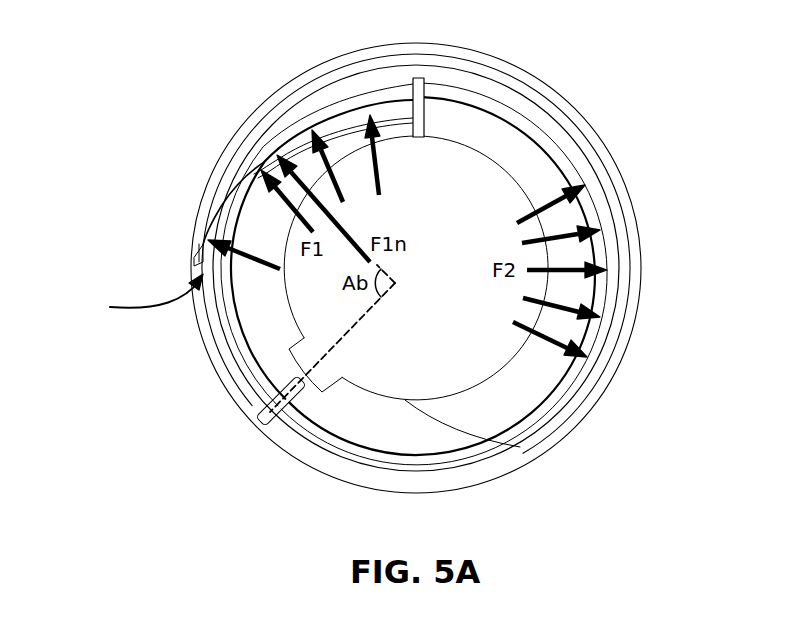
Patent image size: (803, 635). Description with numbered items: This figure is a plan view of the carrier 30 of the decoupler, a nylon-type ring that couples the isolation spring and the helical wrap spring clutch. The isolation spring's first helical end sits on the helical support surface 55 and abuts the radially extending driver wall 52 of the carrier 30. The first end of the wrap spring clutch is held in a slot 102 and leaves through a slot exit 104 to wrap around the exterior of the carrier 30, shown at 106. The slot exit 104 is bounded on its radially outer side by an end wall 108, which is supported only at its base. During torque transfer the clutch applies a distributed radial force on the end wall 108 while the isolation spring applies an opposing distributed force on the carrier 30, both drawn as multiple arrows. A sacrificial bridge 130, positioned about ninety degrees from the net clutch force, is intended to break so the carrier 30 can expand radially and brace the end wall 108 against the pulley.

The carrier 30 is at (597, 145).
The driver wall 52 is at (428, 95).
The helical support surface 55 is at (525, 153).
The slot 102 is at (393, 117).
The slot exit 104 is at (132, 295).
The exterior of the carrier 106 is at (497, 455).
The end wall 108 is at (197, 243).
The bridge 130 is at (307, 388).